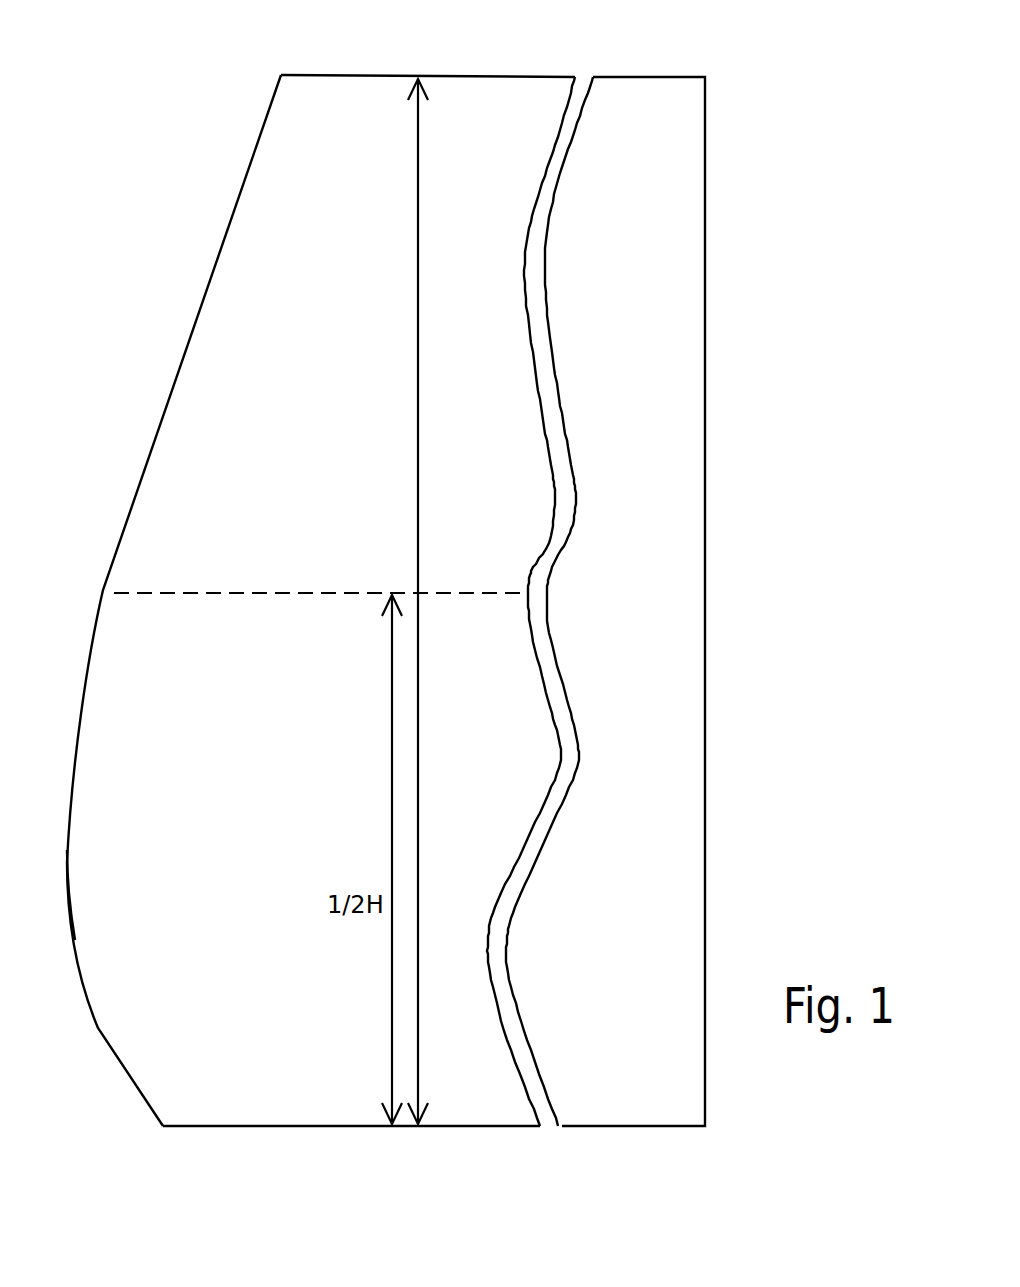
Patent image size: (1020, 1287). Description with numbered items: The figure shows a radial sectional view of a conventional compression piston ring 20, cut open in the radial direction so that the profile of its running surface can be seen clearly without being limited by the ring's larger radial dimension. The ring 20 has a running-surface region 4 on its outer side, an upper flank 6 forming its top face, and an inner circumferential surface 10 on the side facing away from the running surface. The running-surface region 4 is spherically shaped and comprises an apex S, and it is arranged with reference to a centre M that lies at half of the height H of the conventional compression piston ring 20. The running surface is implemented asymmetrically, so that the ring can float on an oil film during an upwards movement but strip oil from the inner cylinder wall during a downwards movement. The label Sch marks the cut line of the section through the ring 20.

The running-surface region 4 is at (93, 638).
The upper flank 6 is at (473, 77).
The inner circumferential surface 10 is at (653, 647).
The conventional compression piston ring 20 is at (312, 614).
The apex S is at (67, 865).
The cut line Sch is at (548, 1120).
The centre M is at (318, 583).
The height H is at (426, 601).